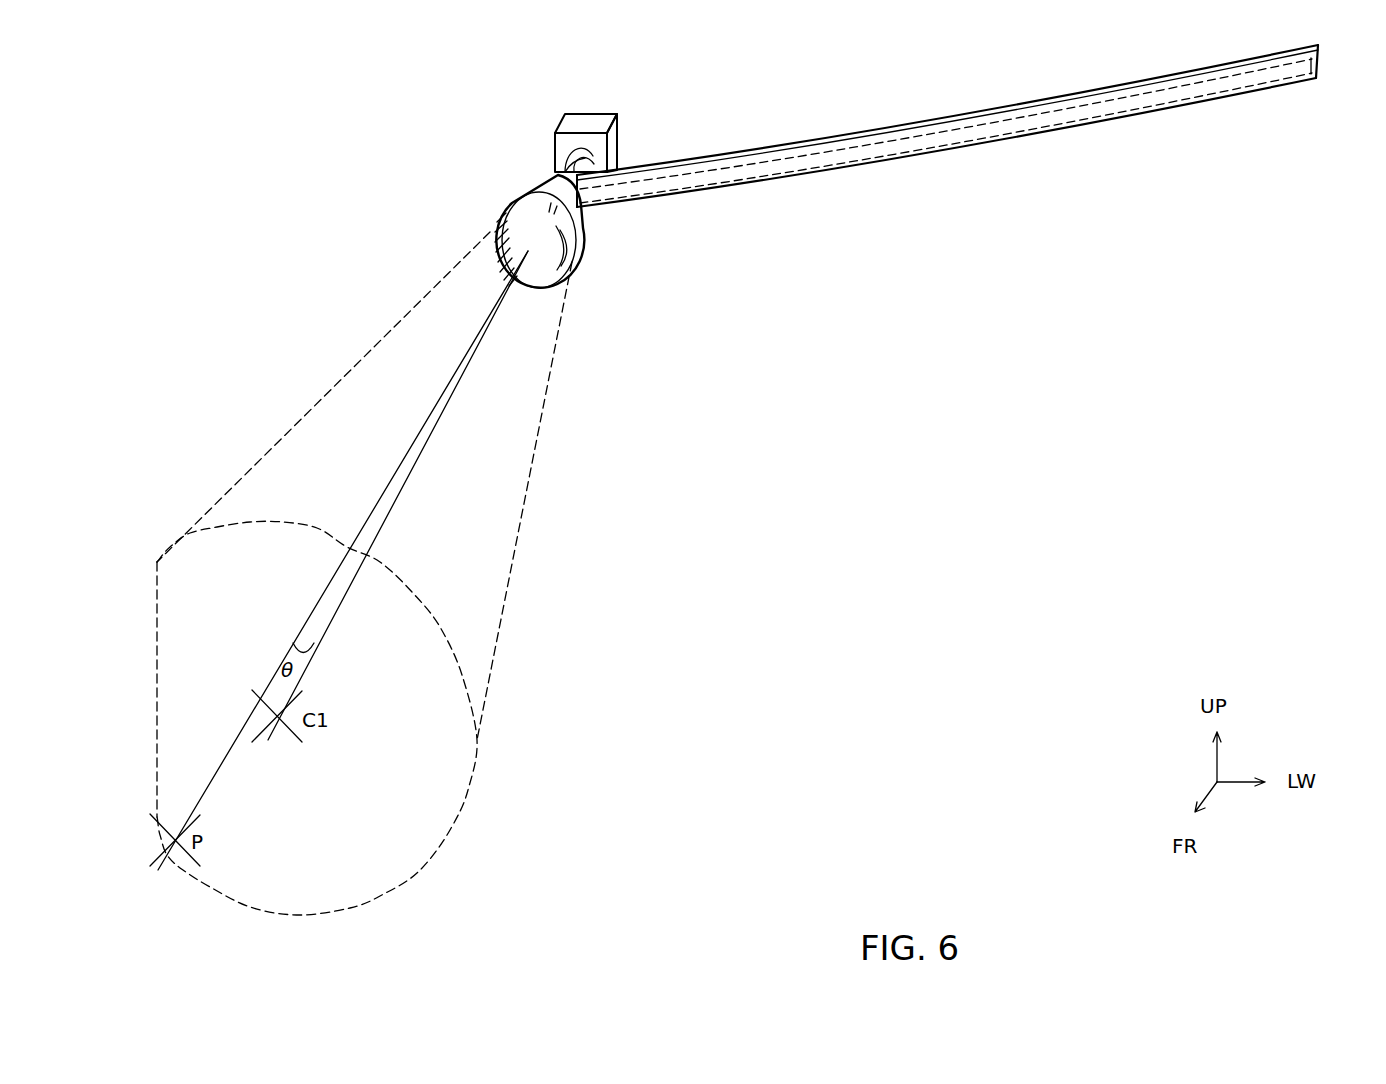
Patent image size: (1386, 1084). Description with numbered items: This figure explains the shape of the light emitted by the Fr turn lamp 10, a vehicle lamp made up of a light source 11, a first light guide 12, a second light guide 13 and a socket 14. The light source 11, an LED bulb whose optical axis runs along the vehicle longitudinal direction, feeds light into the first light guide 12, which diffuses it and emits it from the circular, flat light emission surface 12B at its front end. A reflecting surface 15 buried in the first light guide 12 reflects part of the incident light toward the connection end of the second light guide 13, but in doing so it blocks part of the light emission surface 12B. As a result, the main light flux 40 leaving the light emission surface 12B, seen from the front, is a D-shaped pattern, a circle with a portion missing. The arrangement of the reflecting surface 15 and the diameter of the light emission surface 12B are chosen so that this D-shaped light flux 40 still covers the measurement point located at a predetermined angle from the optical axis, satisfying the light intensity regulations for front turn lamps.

The Fr turn lamp 10 is at (856, 215).
The light source 11 is at (913, 126).
The first light guide 12 is at (533, 243).
The light emission surface 12B is at (541, 278).
The second light guide 13 is at (1020, 137).
The socket 14 is at (593, 112).
The reflecting surface 15 is at (494, 250).
The main light flux 40 is at (535, 432).